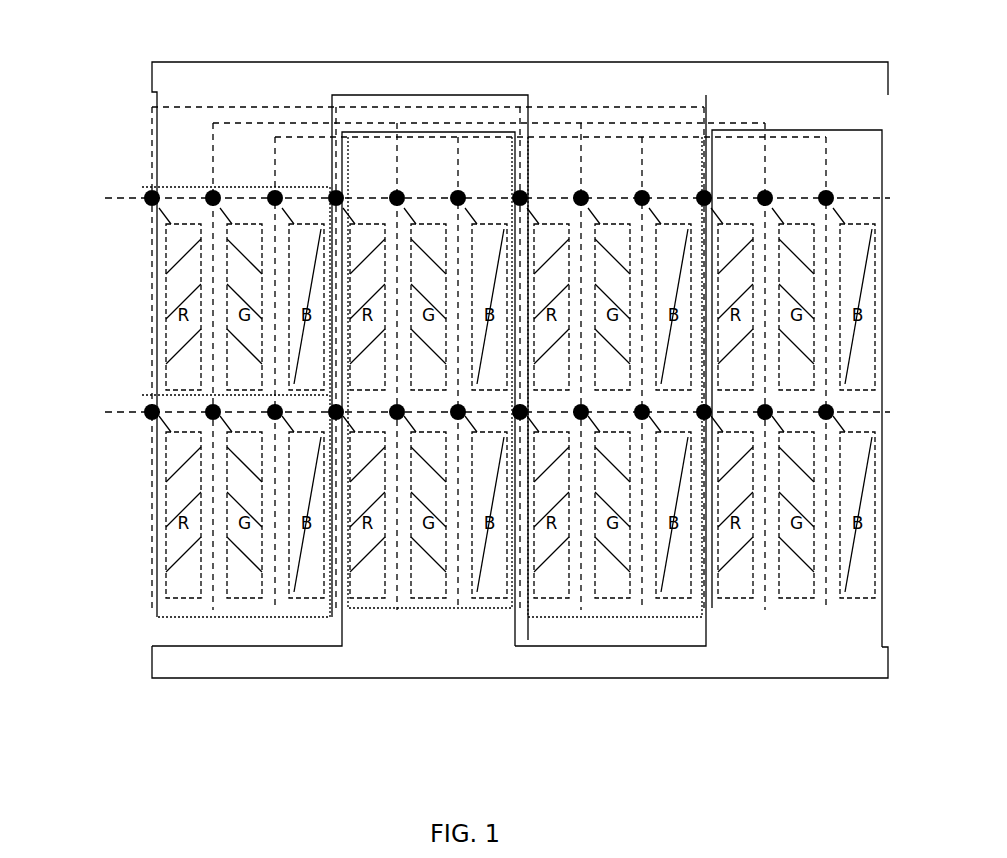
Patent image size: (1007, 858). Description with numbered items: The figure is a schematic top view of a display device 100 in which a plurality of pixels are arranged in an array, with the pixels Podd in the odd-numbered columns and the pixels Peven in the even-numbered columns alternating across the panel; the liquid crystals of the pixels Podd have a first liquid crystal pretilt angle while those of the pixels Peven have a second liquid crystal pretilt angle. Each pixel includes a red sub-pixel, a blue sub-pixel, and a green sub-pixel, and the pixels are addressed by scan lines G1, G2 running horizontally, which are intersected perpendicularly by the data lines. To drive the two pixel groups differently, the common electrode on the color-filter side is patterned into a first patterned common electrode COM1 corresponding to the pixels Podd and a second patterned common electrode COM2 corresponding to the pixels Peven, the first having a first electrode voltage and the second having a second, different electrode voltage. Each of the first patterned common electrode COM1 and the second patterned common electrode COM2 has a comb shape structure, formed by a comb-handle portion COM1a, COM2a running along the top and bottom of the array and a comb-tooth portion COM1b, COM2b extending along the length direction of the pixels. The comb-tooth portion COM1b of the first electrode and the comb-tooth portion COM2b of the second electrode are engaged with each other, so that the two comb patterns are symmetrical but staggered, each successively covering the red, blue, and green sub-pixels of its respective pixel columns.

The display device 100 is at (252, 55).
The first patterned common electrode COM1 is at (178, 83).
The comb-handle portion of the first patterned common electrode COM1a is at (445, 78).
The comb-tooth portion of the first patterned common electrode COM1b is at (610, 607).
The second patterned common electrode COM2 is at (178, 668).
The comb-handle portion of the second patterned common electrode COM2a is at (275, 662).
The comb-tooth portion of the second patterned common electrode COM2b is at (853, 150).
The scan line G1 is at (470, 215).
The scan line G2 is at (470, 412).
The pixels in the odd-numbered columns Podd is at (148, 326).
The pixels in the even-numbered columns Peven is at (370, 608).